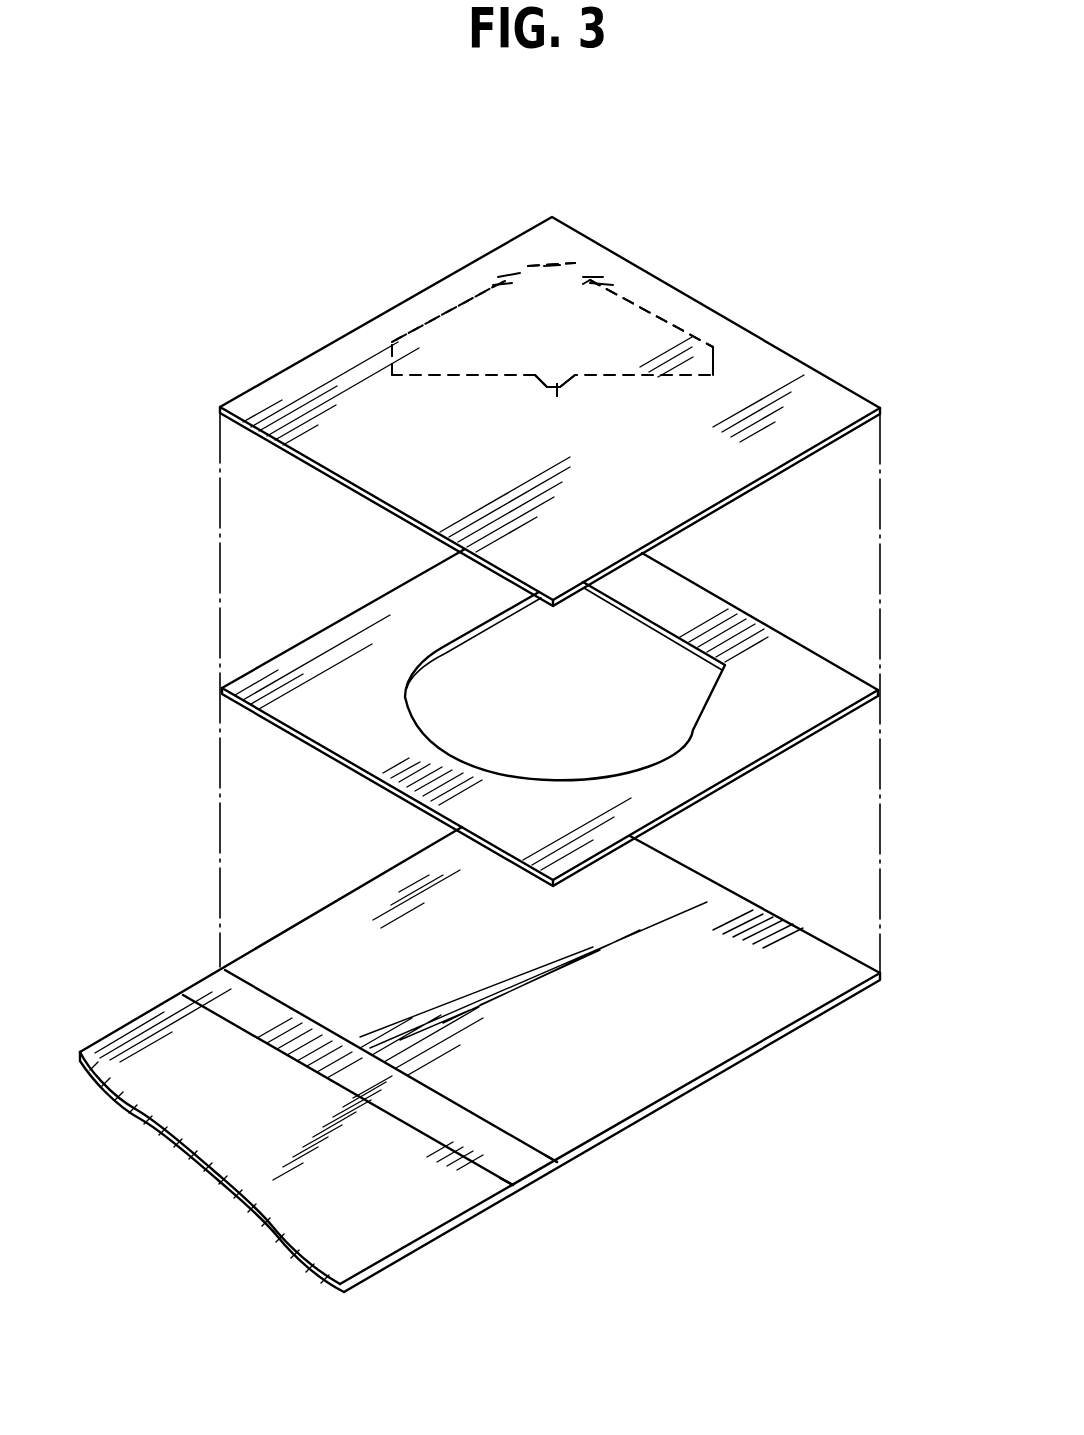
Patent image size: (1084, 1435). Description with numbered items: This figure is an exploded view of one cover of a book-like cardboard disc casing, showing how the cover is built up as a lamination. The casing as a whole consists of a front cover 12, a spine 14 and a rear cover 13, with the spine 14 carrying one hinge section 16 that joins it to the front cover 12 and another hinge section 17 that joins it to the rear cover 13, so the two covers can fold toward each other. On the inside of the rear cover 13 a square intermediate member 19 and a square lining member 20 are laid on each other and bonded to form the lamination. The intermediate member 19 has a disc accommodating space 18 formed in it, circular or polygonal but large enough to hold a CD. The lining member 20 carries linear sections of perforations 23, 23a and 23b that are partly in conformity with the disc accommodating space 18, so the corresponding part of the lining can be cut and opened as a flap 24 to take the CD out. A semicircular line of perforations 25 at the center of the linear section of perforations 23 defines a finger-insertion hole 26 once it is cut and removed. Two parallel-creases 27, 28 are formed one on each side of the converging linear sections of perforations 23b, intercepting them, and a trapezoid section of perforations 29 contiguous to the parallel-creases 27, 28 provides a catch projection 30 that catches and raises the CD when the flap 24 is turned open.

The front cover 12 is at (400, 1230).
The rear cover 13 is at (717, 1027).
The spine 14 is at (522, 1162).
The hinge section 16 is at (520, 1188).
The hinge section 17 is at (557, 1165).
The disc accommodating space 18 is at (650, 722).
The intermediate member 19 is at (778, 670).
The lining member 20 is at (845, 400).
The linear section of perforations 23 is at (447, 377).
The linear section of perforations 23a is at (392, 360).
The converging linear section of perforations 23b is at (427, 310).
The flap 24 is at (592, 357).
The semicircular line of perforations 25 is at (535, 378).
The finger-insertion hole 26 is at (560, 390).
The parallel-crease 27 is at (497, 287).
The parallel-crease 28 is at (512, 273).
The trapezoid section of perforations 29 is at (580, 273).
The catch projection 30 is at (550, 270).